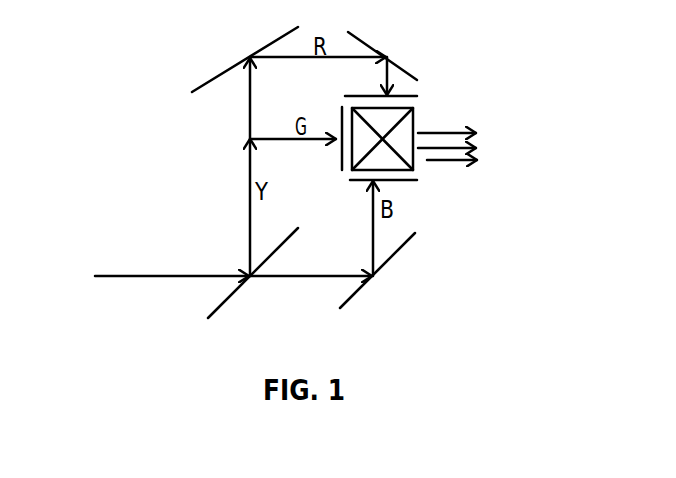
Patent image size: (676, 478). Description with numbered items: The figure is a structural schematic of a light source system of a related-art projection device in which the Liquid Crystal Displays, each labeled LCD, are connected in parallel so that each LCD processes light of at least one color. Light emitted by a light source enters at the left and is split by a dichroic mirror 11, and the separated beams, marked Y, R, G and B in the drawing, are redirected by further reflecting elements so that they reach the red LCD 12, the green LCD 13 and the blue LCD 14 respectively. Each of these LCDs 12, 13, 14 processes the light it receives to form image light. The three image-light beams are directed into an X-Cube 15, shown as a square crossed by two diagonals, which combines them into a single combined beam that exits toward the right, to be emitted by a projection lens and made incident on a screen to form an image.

The dichroic mirror 11 is at (240, 285).
The red LCD 12 is at (397, 253).
The green LCD 13 is at (335, 162).
The blue LCD 14 is at (395, 72).
The X-Cube 15 is at (417, 117).
The Liquid Crystal Display LCD is at (415, 183).